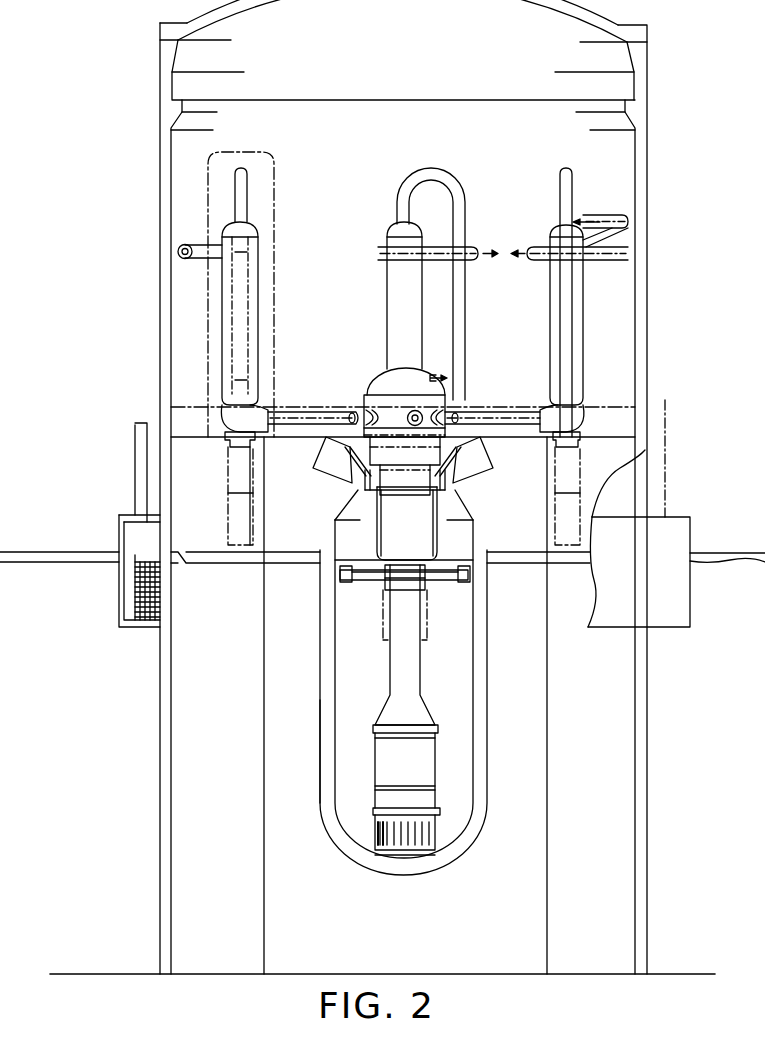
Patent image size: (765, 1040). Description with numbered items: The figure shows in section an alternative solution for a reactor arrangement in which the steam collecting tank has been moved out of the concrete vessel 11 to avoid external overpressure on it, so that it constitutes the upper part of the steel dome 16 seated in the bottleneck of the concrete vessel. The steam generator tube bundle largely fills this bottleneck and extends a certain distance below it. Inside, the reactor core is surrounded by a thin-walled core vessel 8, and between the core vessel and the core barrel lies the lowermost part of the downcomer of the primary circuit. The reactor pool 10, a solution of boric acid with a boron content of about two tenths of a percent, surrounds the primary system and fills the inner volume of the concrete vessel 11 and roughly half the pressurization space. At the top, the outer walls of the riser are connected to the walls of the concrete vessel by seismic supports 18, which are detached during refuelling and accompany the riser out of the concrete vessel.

The core vessel 8 is at (420, 670).
The reactor pool 10 is at (350, 768).
The concrete vessel 11 is at (305, 836).
The steel dome 16 is at (380, 386).
The seismic supports 18 is at (447, 575).